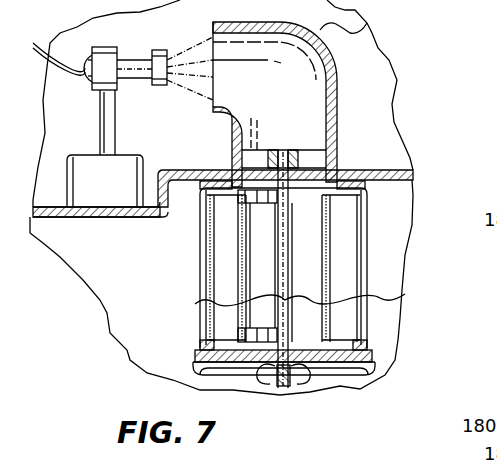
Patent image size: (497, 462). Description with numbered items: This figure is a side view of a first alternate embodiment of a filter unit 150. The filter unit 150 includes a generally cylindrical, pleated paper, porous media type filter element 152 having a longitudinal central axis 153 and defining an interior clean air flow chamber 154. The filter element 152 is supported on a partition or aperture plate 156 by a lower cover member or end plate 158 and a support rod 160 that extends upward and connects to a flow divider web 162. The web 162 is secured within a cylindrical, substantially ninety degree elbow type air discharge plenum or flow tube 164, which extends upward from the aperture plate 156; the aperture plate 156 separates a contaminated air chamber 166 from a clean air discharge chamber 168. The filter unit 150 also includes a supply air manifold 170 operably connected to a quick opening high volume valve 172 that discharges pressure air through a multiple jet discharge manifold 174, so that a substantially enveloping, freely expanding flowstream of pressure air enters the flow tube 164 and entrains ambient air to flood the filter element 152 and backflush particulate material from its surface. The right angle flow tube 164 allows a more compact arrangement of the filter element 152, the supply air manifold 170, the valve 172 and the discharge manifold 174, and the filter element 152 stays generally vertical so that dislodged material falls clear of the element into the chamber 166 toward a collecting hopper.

The filter unit 150 is at (386, 87).
The filter element 152 is at (201, 310).
The longitudinal central axis 153 is at (317, 295).
The interior clean air flow chamber 154 is at (320, 270).
The aperture plate 156 is at (398, 150).
The lower cover member 158 is at (350, 360).
The support rod 160 is at (297, 357).
The flow divider web 162 is at (258, 145).
The flow tube 164 is at (368, 29).
The contaminated air chamber 166 is at (154, 292).
The clean air discharge chamber 168 is at (190, 40).
The supply air manifold 170 is at (128, 143).
The quick opening high volume valve 172 is at (100, 47).
The multiple jet discharge manifold 174 is at (158, 88).